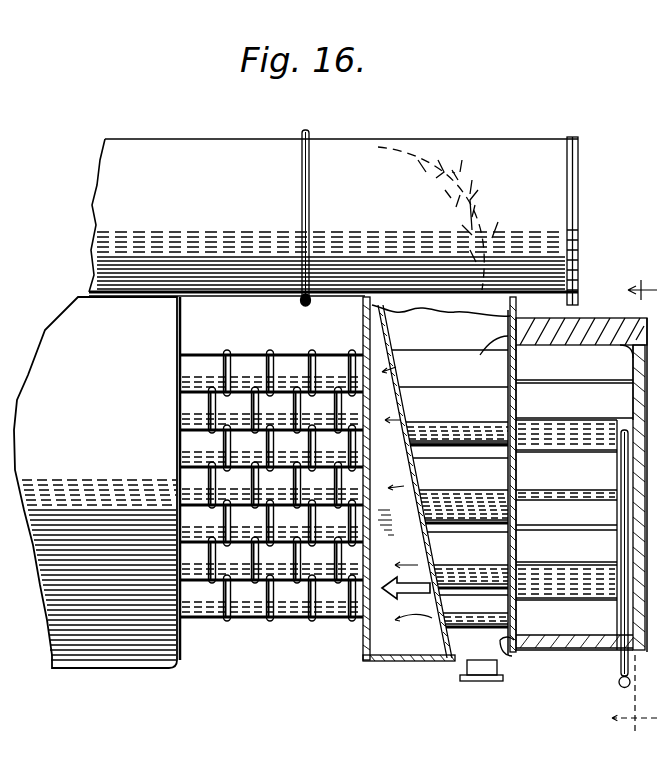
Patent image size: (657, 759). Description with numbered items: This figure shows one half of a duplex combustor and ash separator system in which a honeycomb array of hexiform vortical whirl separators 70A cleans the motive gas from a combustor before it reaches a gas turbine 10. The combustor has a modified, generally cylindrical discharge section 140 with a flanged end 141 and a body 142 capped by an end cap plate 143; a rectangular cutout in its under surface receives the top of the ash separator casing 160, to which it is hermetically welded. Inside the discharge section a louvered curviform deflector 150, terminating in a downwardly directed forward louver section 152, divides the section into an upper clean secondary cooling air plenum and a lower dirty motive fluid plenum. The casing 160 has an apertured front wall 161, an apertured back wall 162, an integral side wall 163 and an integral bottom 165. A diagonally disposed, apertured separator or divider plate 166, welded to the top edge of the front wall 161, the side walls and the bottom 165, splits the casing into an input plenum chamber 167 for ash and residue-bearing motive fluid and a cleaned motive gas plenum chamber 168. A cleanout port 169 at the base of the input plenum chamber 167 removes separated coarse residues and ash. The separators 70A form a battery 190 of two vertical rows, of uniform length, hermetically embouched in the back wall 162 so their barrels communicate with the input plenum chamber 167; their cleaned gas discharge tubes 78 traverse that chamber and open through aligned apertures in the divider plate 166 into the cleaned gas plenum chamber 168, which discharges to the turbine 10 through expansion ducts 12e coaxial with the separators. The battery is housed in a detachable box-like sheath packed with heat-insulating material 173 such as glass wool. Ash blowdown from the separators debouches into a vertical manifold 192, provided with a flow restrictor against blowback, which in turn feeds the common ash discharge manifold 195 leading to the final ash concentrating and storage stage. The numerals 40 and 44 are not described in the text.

The gas turbine 10 is at (131, 412).
The expansion ducts 12e is at (250, 372).
The combustor 40 is at (214, 136).
The wall 44 is at (522, 474).
The hexiform vortical whirl separators 70A is at (588, 369).
The cleaned gas discharge tubes 78 is at (453, 482).
The discharge section 140 is at (398, 141).
The flanged ends 141 is at (578, 158).
The body 142 is at (456, 144).
The end cap plate 143 is at (578, 197).
The louvered curviform deflector 150 is at (463, 171).
The forward louver section 152 is at (478, 190).
The ash separator casing 160 is at (377, 496).
The front wall 161 is at (363, 333).
The back wall 162 is at (512, 672).
The side wall 163 is at (441, 306).
The bottom 165 is at (398, 662).
The separator or divider plate 166 is at (412, 458).
The input plenum chamber 167 is at (450, 345).
The cleaned motive gas plenum chamber 168 is at (405, 494).
The cleanout port 169 is at (482, 681).
The heat-insulating material 173 is at (590, 330).
The separator battery 190 is at (598, 600).
The vertical manifold 192 is at (620, 664).
The common ash discharge manifold 195 is at (618, 686).